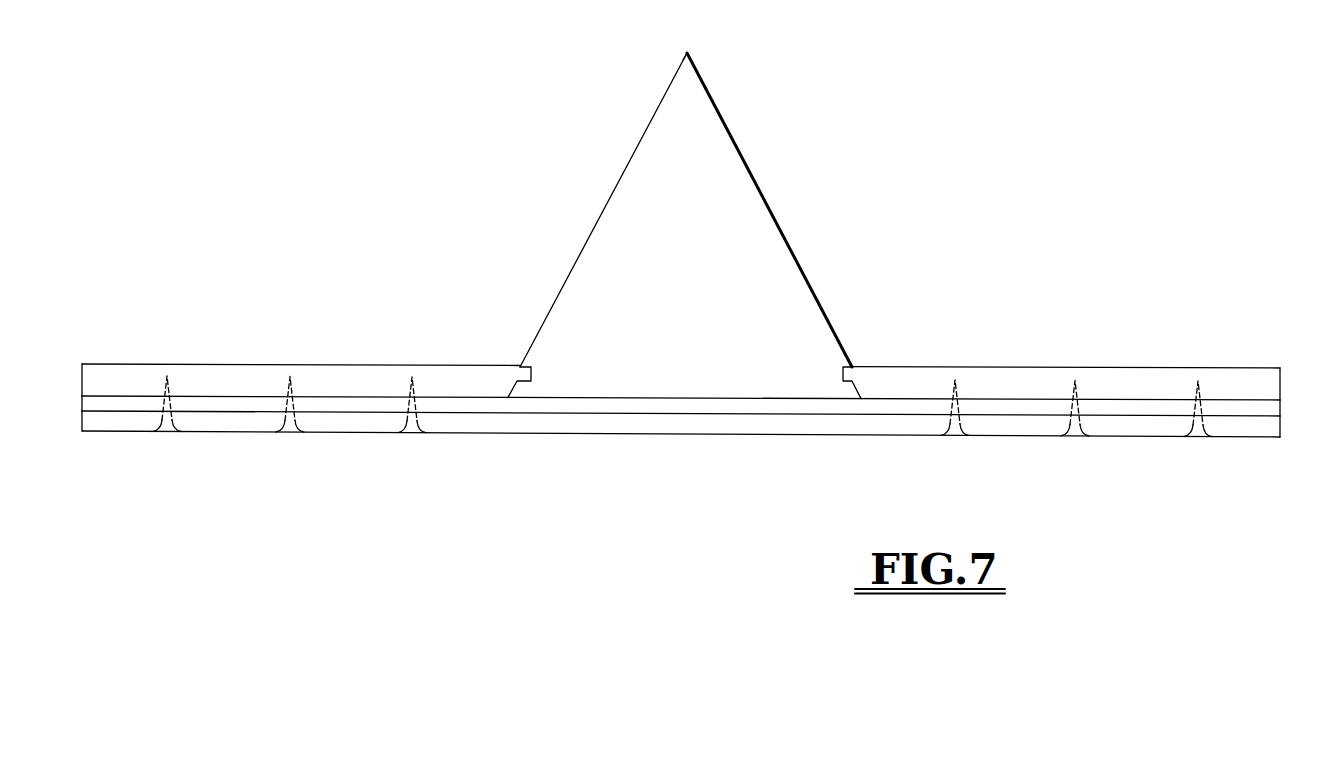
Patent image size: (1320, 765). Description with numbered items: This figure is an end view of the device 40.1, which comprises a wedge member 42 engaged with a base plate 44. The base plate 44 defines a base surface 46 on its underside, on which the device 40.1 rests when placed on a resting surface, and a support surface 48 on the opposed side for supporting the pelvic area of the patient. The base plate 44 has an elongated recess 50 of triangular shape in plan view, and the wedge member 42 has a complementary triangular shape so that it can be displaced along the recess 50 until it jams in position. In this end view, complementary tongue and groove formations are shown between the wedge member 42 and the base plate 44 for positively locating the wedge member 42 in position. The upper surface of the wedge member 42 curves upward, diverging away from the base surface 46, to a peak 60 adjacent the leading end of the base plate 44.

The device 40.1 is at (450, 260).
The wedge member 42 is at (807, 215).
The base plate 44 is at (786, 425).
The base surface 46 is at (556, 436).
The support surface 48 is at (350, 363).
The elongated recess 50 is at (852, 363).
The peak 60 is at (689, 53).